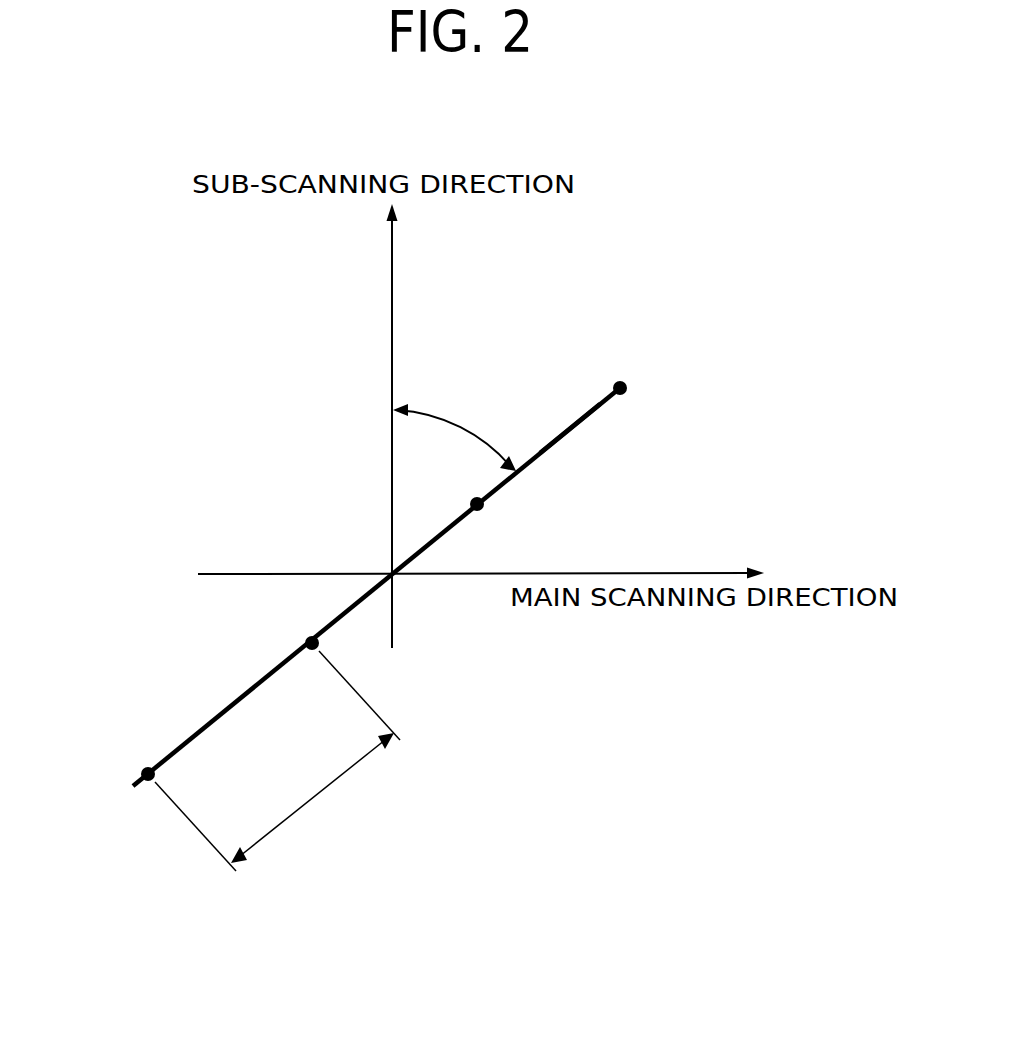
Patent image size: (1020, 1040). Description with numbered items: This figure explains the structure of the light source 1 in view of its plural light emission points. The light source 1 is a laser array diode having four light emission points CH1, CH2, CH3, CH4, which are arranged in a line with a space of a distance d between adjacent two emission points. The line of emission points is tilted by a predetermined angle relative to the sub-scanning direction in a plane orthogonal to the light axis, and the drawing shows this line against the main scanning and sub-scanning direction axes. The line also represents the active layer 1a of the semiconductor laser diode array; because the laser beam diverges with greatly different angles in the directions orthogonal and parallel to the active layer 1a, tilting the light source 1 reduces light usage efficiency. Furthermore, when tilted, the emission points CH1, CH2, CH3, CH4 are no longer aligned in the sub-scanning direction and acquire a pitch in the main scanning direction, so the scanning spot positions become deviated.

The light source 1 is at (560, 392).
The active layer 1a is at (568, 432).
The light emission point CH1 is at (627, 392).
The light emission point CH2 is at (483, 509).
The light emission point CH3 is at (303, 641).
The light emission point CH4 is at (140, 765).
The distance d is at (277, 761).